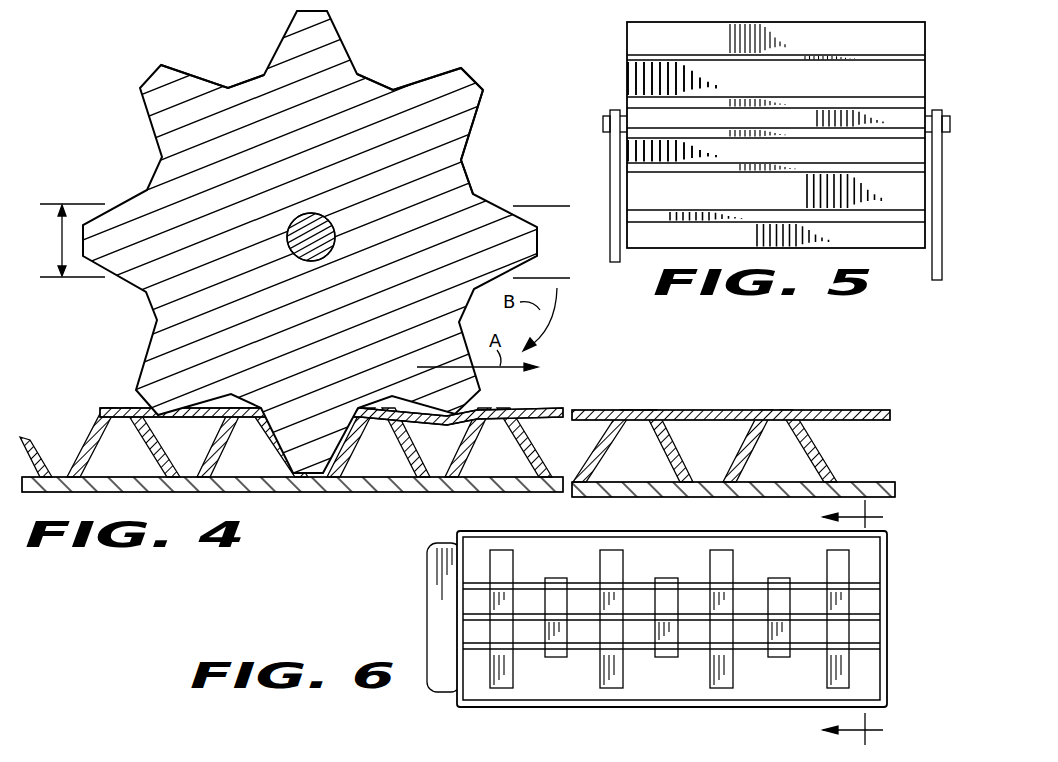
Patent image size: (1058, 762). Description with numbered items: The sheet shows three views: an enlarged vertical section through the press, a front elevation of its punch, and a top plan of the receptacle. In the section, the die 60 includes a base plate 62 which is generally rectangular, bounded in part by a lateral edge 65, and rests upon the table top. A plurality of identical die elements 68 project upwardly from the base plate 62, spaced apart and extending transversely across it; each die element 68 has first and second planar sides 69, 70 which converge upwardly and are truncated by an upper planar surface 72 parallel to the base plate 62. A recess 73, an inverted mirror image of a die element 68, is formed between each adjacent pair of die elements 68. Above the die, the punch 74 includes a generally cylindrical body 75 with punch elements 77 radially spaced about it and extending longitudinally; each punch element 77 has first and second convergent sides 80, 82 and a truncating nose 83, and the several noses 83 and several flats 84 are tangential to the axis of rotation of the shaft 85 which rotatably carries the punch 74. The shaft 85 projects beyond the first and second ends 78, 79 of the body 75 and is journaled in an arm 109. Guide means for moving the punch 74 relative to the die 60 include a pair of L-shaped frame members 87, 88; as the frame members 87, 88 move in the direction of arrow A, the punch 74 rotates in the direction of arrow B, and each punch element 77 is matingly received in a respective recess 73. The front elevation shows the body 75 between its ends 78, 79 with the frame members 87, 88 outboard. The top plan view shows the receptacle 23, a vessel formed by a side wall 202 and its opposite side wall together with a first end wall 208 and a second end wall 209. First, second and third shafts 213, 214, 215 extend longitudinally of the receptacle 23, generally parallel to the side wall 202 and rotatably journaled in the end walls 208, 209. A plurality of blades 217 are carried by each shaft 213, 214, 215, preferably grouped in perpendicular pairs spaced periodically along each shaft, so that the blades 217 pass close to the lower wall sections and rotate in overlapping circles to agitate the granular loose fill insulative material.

In FIG. 4, the punch element 77 is at (290, 22).
In FIG. 5, the punch element 77 is at (862, 22).
In FIG. 4, the flat 84 is at (229, 84).
In FIG. 4, the punch 74 is at (368, 79).
In FIG. 5, the punch 74 is at (925, 97).
In FIG. 4, the second convergent side 82 is at (432, 78).
In FIG. 4, the truncating nose 83 is at (473, 81).
In FIG. 4, the first convergent side 80 is at (477, 123).
In FIG. 4, the cylindrical body 75 is at (464, 169).
In FIG. 5, the cylindrical body 75 is at (627, 82).
In FIG. 4, the shaft 85 is at (326, 219).
In FIG. 4, the arm 109 is at (60, 233).
In FIG. 4, the recess 73 is at (60, 456).
In FIG. 4, the die element 68 is at (527, 437).
In FIG. 4, the first planar side 69 is at (603, 445).
In FIG. 4, the base plate 62 is at (376, 494).
In FIG. 4, the upper planar surface 72 is at (635, 413).
In FIG. 4, the second planar side 70 is at (675, 457).
In FIG. 4, the die 60 is at (823, 478).
In FIG. 4, the lateral edge 65 is at (885, 483).
In FIG. 5, the first end 78 is at (627, 45).
In FIG. 5, the L-shaped frame member 87 is at (610, 178).
In FIG. 5, the second end 79 is at (925, 58).
In FIG. 5, the L-shaped frame member 88 is at (934, 263).
In FIG. 6, the second end wall 209 is at (457, 595).
In FIG. 6, the blade 217 is at (612, 563).
In FIG. 6, the second shaft 214 is at (695, 583).
In FIG. 6, the first end wall 208 is at (887, 610).
In FIG. 6, the first shaft 213 is at (587, 622).
In FIG. 6, the third shaft 215 is at (748, 653).
In FIG. 6, the receptacle 23 is at (538, 712).
In FIG. 6, the side wall 202 is at (645, 707).